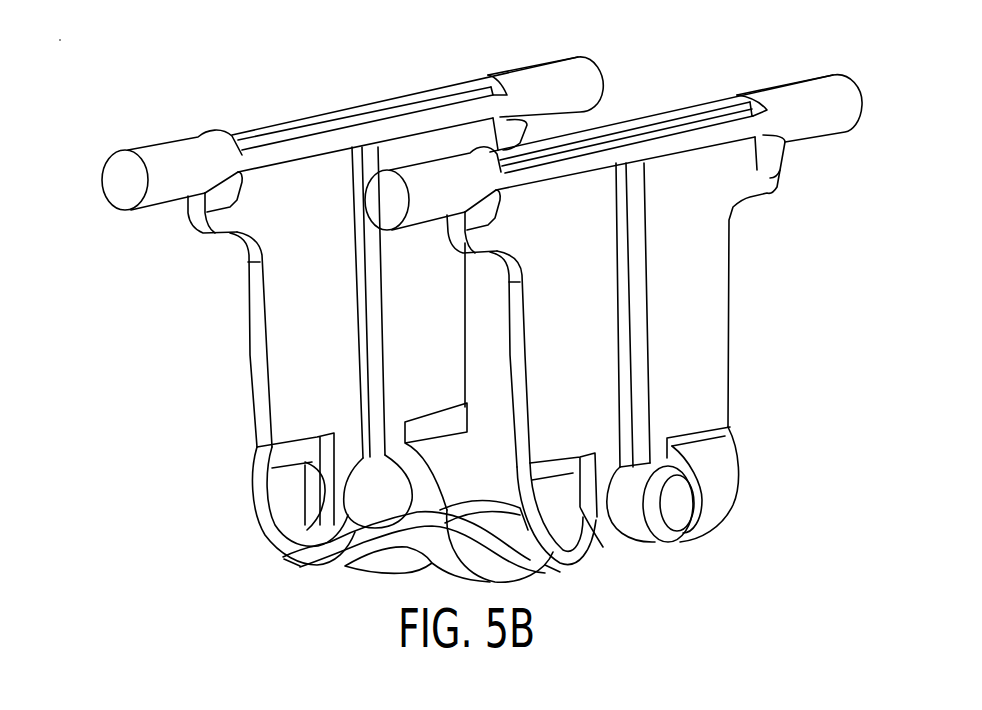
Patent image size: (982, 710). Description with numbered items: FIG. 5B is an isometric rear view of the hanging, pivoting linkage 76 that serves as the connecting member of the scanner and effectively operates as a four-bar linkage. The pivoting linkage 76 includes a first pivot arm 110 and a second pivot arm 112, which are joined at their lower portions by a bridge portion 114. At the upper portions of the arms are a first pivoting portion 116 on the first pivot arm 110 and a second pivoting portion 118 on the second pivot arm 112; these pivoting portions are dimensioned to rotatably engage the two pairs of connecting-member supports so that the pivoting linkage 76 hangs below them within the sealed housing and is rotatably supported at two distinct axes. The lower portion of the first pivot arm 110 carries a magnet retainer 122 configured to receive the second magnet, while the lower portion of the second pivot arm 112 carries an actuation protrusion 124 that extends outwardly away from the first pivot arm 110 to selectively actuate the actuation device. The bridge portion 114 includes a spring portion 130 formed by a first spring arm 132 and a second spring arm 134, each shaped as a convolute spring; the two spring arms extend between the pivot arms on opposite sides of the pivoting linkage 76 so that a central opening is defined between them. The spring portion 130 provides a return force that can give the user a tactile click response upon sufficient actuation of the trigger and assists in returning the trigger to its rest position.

The pivoting linkage 76 is at (148, 46).
The first pivot arm 110 is at (250, 350).
The second pivot arm 112 is at (728, 333).
The bridge portion 114 is at (568, 580).
The first pivoting portion 116 is at (352, 105).
The second pivoting portion 118 is at (672, 108).
The magnet retainer 122 is at (312, 490).
The actuation protrusion 124 is at (678, 541).
The spring portion 130 is at (428, 571).
The first spring arm 132 is at (284, 559).
The second spring arm 134 is at (738, 498).